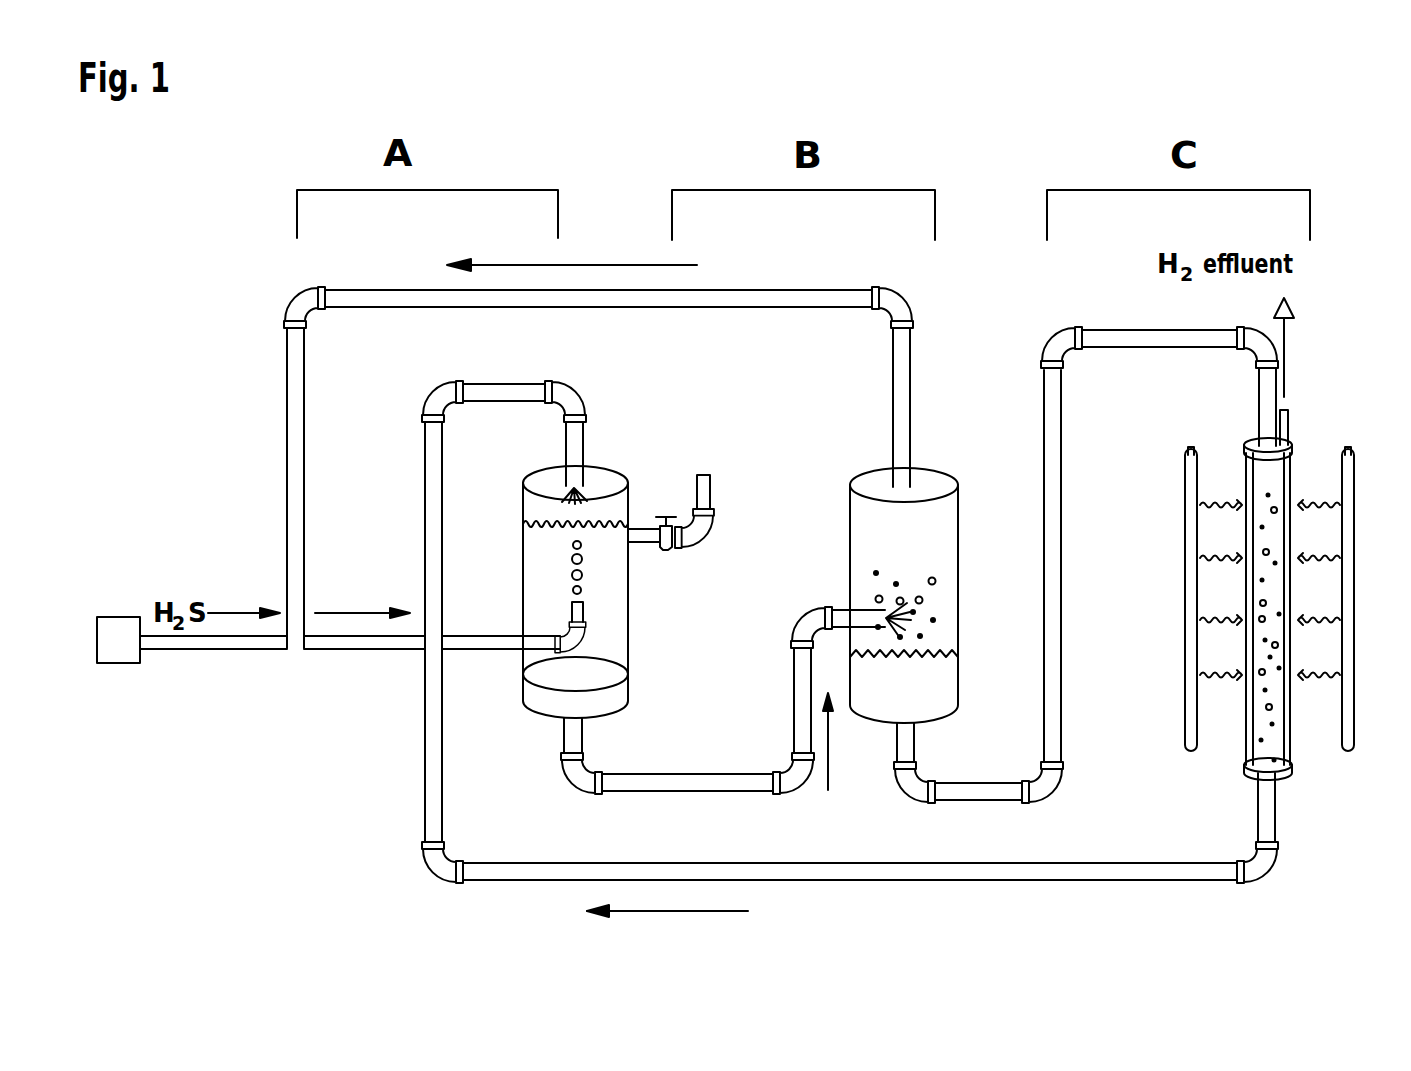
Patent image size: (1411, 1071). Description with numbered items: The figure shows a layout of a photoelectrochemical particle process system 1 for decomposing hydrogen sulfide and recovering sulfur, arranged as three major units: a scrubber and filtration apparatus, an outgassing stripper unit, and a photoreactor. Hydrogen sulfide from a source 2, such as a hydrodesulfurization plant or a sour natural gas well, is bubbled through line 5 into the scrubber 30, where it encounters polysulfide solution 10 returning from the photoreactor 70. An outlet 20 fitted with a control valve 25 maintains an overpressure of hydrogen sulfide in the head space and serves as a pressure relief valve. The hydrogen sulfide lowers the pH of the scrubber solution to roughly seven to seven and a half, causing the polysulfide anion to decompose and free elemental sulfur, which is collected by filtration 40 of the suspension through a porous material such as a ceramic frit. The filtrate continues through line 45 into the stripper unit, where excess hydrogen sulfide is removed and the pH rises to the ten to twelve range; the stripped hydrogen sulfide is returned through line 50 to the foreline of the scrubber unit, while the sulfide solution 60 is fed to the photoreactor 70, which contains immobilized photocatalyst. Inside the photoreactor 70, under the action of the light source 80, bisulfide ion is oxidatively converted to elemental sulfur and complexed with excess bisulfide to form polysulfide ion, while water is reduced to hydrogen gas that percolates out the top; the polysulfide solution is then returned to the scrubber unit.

The system 1 is at (667, 135).
The source 2 is at (118, 641).
The line 5 is at (348, 649).
The polysulfide solution 10 is at (577, 400).
The outlet 20 is at (712, 481).
The control valve 25 is at (666, 517).
The scrubber 30 is at (608, 597).
The filtration 40 is at (608, 703).
The line 45 is at (795, 720).
The line 50 is at (904, 395).
The sulfide solution 60 is at (917, 680).
The photoreactor 70 is at (1273, 738).
The light source 80 is at (1192, 592).